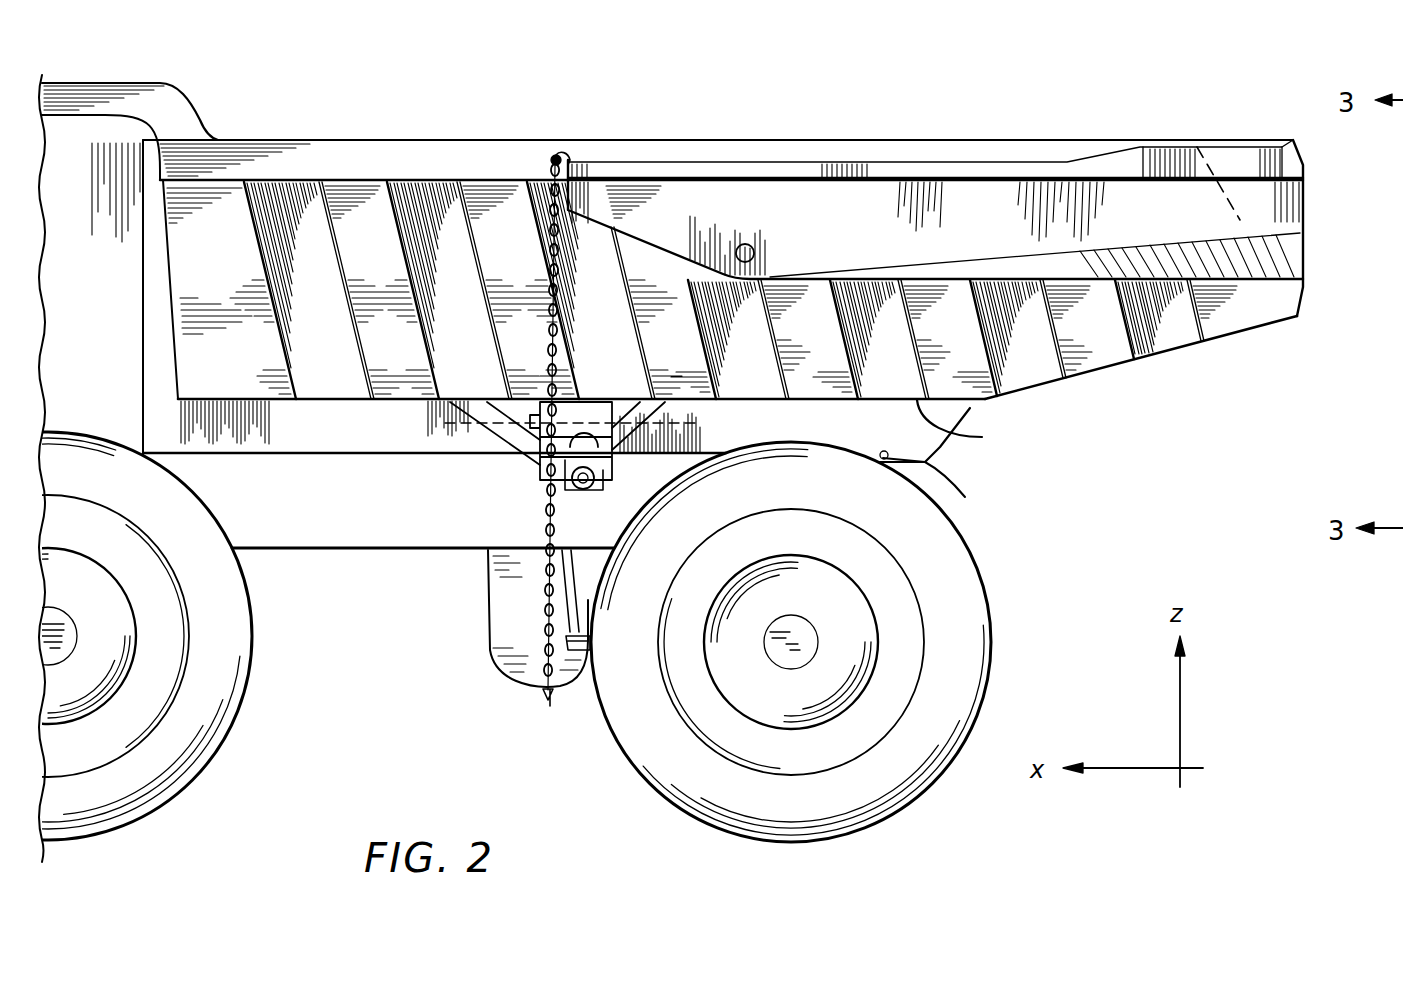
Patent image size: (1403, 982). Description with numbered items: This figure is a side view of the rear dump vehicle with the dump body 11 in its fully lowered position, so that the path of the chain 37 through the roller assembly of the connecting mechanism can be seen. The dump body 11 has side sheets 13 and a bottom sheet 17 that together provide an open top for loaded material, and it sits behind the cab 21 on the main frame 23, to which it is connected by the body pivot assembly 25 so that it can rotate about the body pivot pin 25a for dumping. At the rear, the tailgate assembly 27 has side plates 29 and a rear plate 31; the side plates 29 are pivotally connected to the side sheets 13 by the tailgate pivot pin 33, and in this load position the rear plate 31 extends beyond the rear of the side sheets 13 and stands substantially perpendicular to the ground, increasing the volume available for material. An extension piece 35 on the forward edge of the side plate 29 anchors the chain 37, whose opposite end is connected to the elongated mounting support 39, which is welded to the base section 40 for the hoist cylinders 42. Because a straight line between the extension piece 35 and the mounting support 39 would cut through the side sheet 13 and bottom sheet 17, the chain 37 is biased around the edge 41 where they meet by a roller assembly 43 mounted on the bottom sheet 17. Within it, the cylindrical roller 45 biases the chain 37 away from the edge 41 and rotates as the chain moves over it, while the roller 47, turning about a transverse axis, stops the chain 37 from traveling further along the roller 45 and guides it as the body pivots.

The dump body 11 is at (290, 128).
The side sheets 13 is at (416, 150).
The bottom sheet 17 is at (668, 422).
The cab 21 is at (100, 313).
The main frame 23 is at (303, 525).
The body pivot assembly 25 is at (940, 452).
The body pivot pin 25a is at (965, 500).
The tailgate assembly 27 is at (785, 165).
The side plates 29 is at (1215, 266).
The rear plate 31 is at (1310, 185).
The tailgate pivot pin 33 is at (752, 248).
The extension pieces 35 is at (558, 155).
The chain 37 is at (558, 283).
The mounting support 39 is at (537, 698).
The base section 40 is at (500, 620).
The edge 41 is at (948, 430).
The hoist cylinders 42 is at (597, 582).
The roller assemblies 43 is at (530, 464).
The cylindrical roller 45 is at (582, 398).
The roller 47 is at (570, 493).